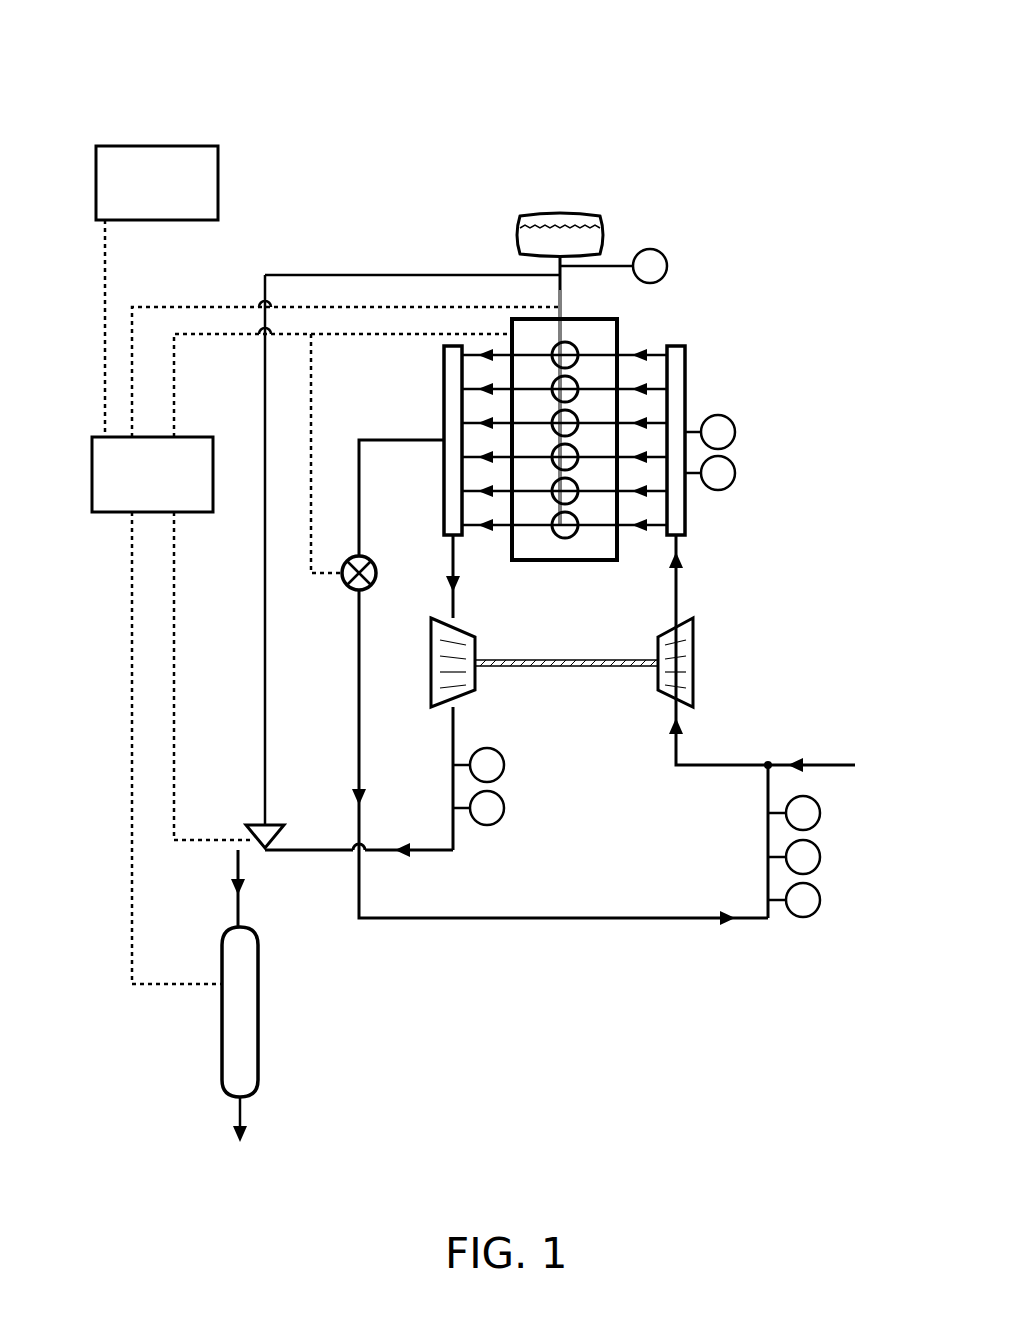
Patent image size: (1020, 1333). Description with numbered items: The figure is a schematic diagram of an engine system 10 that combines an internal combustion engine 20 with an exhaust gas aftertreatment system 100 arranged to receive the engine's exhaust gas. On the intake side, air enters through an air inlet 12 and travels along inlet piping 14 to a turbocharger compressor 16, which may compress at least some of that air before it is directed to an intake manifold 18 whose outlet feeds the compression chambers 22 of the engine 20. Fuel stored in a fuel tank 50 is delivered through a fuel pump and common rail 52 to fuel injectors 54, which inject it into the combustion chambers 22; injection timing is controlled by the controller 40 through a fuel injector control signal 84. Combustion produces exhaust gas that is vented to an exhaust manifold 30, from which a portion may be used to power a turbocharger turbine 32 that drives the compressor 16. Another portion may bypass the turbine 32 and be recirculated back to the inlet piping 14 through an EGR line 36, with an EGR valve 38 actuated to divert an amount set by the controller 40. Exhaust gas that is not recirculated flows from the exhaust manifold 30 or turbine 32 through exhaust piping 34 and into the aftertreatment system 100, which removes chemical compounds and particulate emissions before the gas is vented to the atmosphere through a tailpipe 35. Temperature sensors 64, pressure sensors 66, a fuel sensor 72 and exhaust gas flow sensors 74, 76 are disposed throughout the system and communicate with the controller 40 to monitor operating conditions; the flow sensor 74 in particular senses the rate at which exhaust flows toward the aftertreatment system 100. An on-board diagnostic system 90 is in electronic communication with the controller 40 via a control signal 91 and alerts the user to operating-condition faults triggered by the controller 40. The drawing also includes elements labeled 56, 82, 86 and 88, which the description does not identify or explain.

The engine system 10 is at (118, 38).
The air inlet 12 is at (846, 765).
The inlet piping 14 is at (745, 765).
The turbocharger compressor 16 is at (696, 642).
The intake manifold 18 is at (685, 366).
The internal combustion engine 20 is at (620, 326).
The compression chambers 22 is at (563, 538).
The exhaust manifold 30 is at (444, 366).
The turbocharger turbine 32 is at (478, 642).
The exhaust piping 34 is at (432, 853).
The tailpipe 35 is at (240, 1112).
The EGR line 36 is at (359, 702).
The EGR valve 38 is at (366, 588).
The controller 40 is at (97, 512).
The fuel tank 50 is at (600, 224).
The common rail 52 is at (562, 300).
The fuel injectors 54 is at (577, 537).
The valve 56 is at (276, 824).
The temperature sensors 64 is at (735, 432).
The pressure sensors 66 is at (735, 473).
The fuel sensor 72 is at (667, 258).
The exhaust gas flow sensor 74 is at (505, 808).
The exhaust gas flow sensor 76 is at (820, 900).
The control line to engine 82 is at (176, 384).
The fuel injector control signal 84 is at (150, 307).
The control line to valve 86 is at (202, 840).
The control line to tank 88 is at (170, 984).
The OBD system 90 is at (178, 146).
The control signal 91 is at (105, 305).
The exhaust gas aftertreatment system 100 is at (258, 1000).